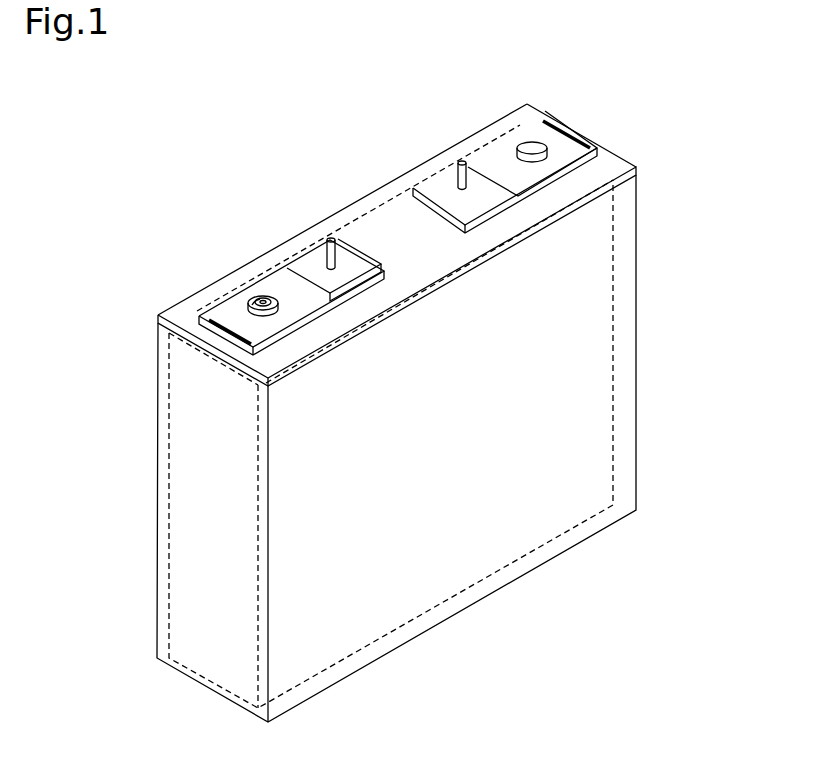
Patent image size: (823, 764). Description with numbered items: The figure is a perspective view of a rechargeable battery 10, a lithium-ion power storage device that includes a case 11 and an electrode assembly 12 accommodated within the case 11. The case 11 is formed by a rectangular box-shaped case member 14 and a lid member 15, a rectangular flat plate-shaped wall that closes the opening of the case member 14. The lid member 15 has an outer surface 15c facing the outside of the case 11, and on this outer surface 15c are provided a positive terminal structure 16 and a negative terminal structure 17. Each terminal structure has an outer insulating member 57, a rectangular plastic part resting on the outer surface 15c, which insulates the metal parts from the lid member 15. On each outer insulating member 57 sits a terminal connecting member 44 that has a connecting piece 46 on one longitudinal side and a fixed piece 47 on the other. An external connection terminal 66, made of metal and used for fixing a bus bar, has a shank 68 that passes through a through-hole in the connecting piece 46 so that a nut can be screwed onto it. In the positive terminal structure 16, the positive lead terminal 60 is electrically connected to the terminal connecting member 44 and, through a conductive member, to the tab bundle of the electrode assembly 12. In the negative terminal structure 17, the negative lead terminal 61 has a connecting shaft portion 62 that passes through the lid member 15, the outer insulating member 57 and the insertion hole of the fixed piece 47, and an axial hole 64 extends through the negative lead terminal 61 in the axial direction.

The rechargeable battery 10 is at (684, 144).
The case 11 is at (735, 162).
The electrode assembly 12 is at (616, 304).
The case member 14 is at (636, 212).
The lid member 15 is at (636, 168).
The outer surface 15c is at (366, 203).
The positive terminal structure 16 is at (605, 143).
The negative terminal structure 17 is at (209, 339).
The terminal connecting member 44 is at (274, 280).
The connecting piece 46 is at (311, 261).
The fixed piece 47 is at (222, 303).
The outer insulating member 57 is at (289, 337).
The positive lead terminal 60 is at (533, 142).
The negative lead terminal 61 is at (258, 316).
The connecting shaft portion 62 is at (256, 300).
The axial hole 64 is at (283, 303).
The external connection terminal 66 is at (339, 241).
The shank 68 is at (345, 266).